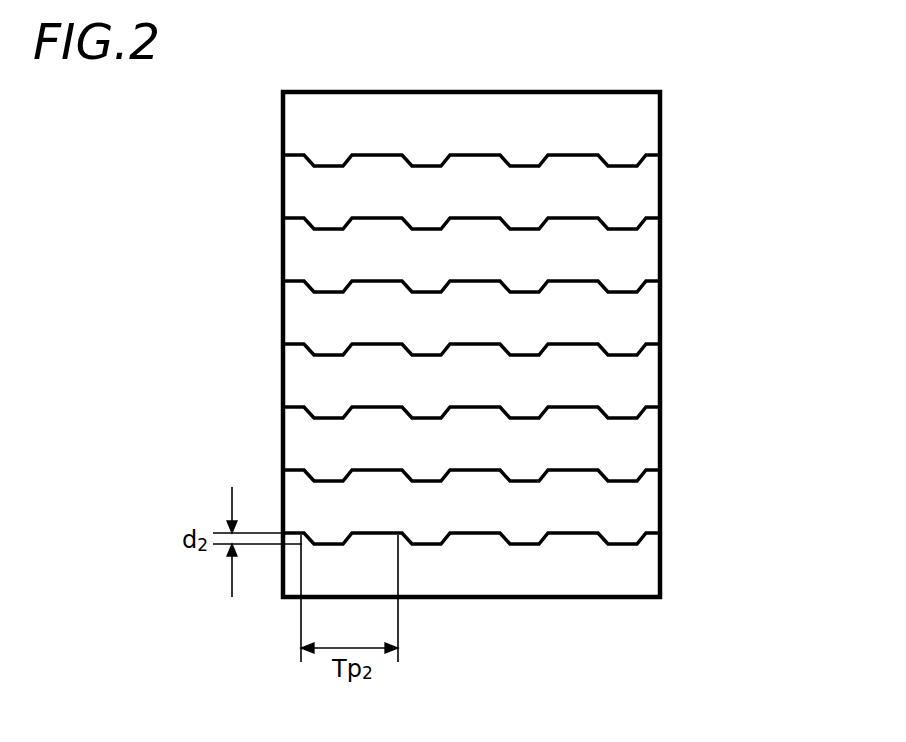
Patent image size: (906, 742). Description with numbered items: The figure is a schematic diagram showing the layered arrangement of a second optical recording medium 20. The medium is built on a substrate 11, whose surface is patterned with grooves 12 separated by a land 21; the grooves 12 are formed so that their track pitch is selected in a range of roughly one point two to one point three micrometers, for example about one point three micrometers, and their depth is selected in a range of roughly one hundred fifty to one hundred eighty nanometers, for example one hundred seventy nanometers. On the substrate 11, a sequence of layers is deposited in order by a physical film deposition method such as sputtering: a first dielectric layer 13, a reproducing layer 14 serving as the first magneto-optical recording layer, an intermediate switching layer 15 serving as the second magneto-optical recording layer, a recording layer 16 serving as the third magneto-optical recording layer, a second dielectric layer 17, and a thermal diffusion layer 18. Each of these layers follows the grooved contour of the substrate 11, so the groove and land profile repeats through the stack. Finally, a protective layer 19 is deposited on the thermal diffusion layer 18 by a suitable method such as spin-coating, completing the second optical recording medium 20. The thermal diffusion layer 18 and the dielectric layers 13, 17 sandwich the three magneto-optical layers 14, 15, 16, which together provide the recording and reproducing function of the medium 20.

The substrate 11 is at (633, 567).
The grooves 12 is at (325, 544).
The first dielectric layer 13 is at (633, 504).
The reproducing layer 14 is at (633, 442).
The intermediate switching layer 15 is at (633, 379).
The recording layer 16 is at (633, 316).
The second dielectric layer 17 is at (633, 253).
The thermal diffusion layer 18 is at (633, 190).
The protective layer 19 is at (633, 127).
The second optical recording medium 20 is at (522, 698).
The land 21 is at (370, 533).